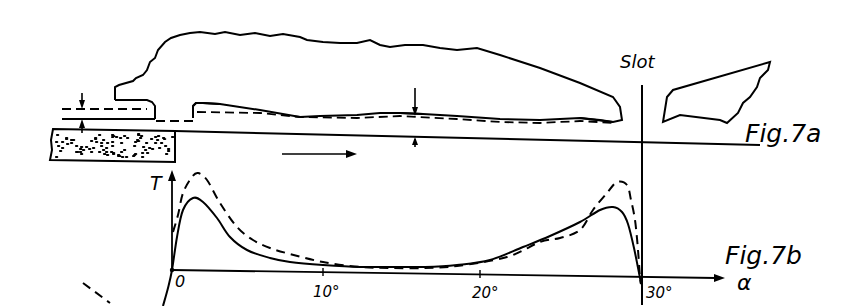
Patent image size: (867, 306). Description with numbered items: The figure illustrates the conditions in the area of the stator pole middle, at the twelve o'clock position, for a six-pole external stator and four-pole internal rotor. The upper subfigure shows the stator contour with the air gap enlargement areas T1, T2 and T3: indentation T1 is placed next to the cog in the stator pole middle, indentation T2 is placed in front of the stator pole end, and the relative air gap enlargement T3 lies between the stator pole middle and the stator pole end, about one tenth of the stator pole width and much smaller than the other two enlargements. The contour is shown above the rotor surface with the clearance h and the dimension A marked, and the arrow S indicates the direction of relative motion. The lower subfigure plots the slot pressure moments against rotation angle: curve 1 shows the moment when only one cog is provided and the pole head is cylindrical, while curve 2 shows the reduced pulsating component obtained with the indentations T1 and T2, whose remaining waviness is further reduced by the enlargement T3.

In FIG. 7B, the slot pressure moment curve 1 is at (632, 195).
In FIG. 7B, the slot pressure moment curve with indentations 2 is at (627, 218).
In FIG. 7A, the clearance height between blade and die h is at (70, 108).
In FIG. 7A, the die section depth dimension A is at (423, 112).
In FIG. 7A, the air gap enlargement T1 is at (205, 103).
In FIG. 7A, the air gap enlargement T2 is at (590, 116).
In FIG. 7A, the air gap enlargement T3 is at (400, 112).
In FIG. 7A, the direction of travel S is at (331, 156).